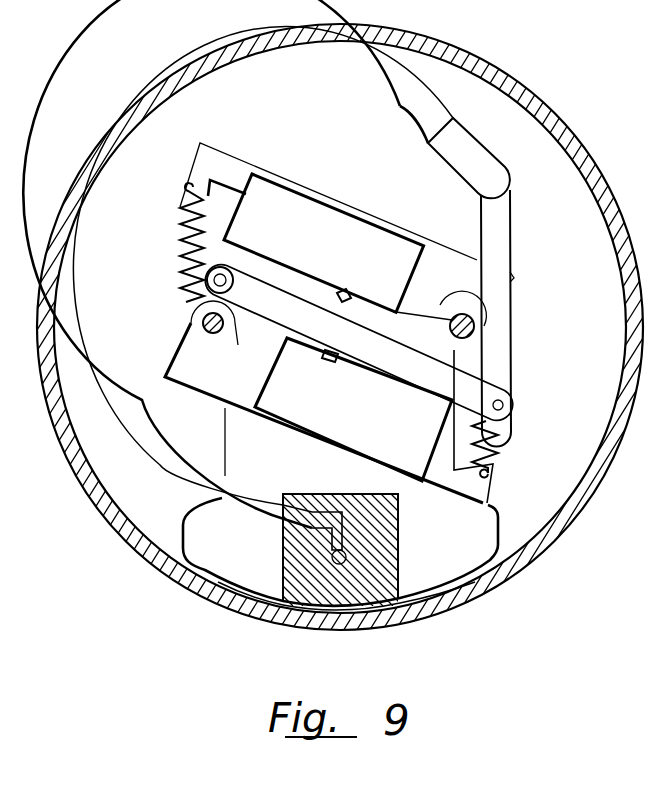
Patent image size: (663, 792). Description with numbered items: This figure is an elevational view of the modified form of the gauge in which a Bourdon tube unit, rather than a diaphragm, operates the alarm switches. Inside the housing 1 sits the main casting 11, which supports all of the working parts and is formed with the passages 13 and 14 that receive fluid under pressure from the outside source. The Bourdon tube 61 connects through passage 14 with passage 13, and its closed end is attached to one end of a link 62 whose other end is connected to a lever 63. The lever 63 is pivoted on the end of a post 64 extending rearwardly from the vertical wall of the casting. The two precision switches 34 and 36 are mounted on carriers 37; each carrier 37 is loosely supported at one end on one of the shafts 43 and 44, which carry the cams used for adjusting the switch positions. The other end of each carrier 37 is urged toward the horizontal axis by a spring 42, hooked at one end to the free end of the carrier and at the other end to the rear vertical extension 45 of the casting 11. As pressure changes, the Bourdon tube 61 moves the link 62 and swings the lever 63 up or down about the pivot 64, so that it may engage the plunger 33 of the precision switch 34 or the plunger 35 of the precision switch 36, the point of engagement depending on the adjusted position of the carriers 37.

The housing 1 is at (537, 548).
The main casting 11 is at (380, 551).
The passage 13 is at (333, 557).
The passage 14 is at (352, 533).
The plunger 33 is at (300, 338).
The precision switch 34 is at (370, 428).
The plunger 35 is at (350, 297).
The precision switch 36 is at (346, 256).
The carrier 37 is at (450, 279).
The spring 42 is at (183, 260).
The shaft 43 is at (203, 325).
The shaft 44 is at (468, 313).
The rear vertical extension 45 is at (277, 470).
The Bourdon tube 61 is at (170, 453).
The link 62 is at (493, 252).
The lever 63 is at (352, 344).
The post 64 is at (200, 296).